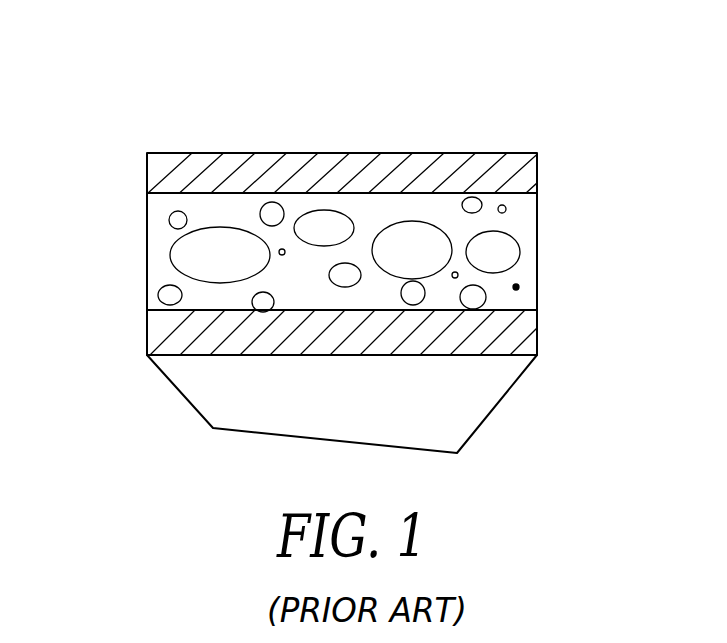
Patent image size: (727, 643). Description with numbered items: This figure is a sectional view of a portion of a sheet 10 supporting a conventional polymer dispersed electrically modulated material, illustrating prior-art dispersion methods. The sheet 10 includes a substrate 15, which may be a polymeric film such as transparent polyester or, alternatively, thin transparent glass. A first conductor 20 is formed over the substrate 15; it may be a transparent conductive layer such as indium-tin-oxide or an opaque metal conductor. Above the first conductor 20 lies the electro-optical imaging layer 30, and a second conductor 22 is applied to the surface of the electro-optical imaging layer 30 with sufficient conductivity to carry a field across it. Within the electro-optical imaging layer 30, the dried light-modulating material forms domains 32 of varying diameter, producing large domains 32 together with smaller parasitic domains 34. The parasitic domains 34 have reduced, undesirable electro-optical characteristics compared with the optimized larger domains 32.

The sheet 10 is at (250, 90).
The substrate 15 is at (181, 391).
The first conductor 20 is at (147, 329).
The second conductor 22 is at (147, 173).
The electro-optical imaging layer 30 is at (140, 194).
The domains 32 is at (500, 243).
The parasitic domains 34 is at (485, 305).